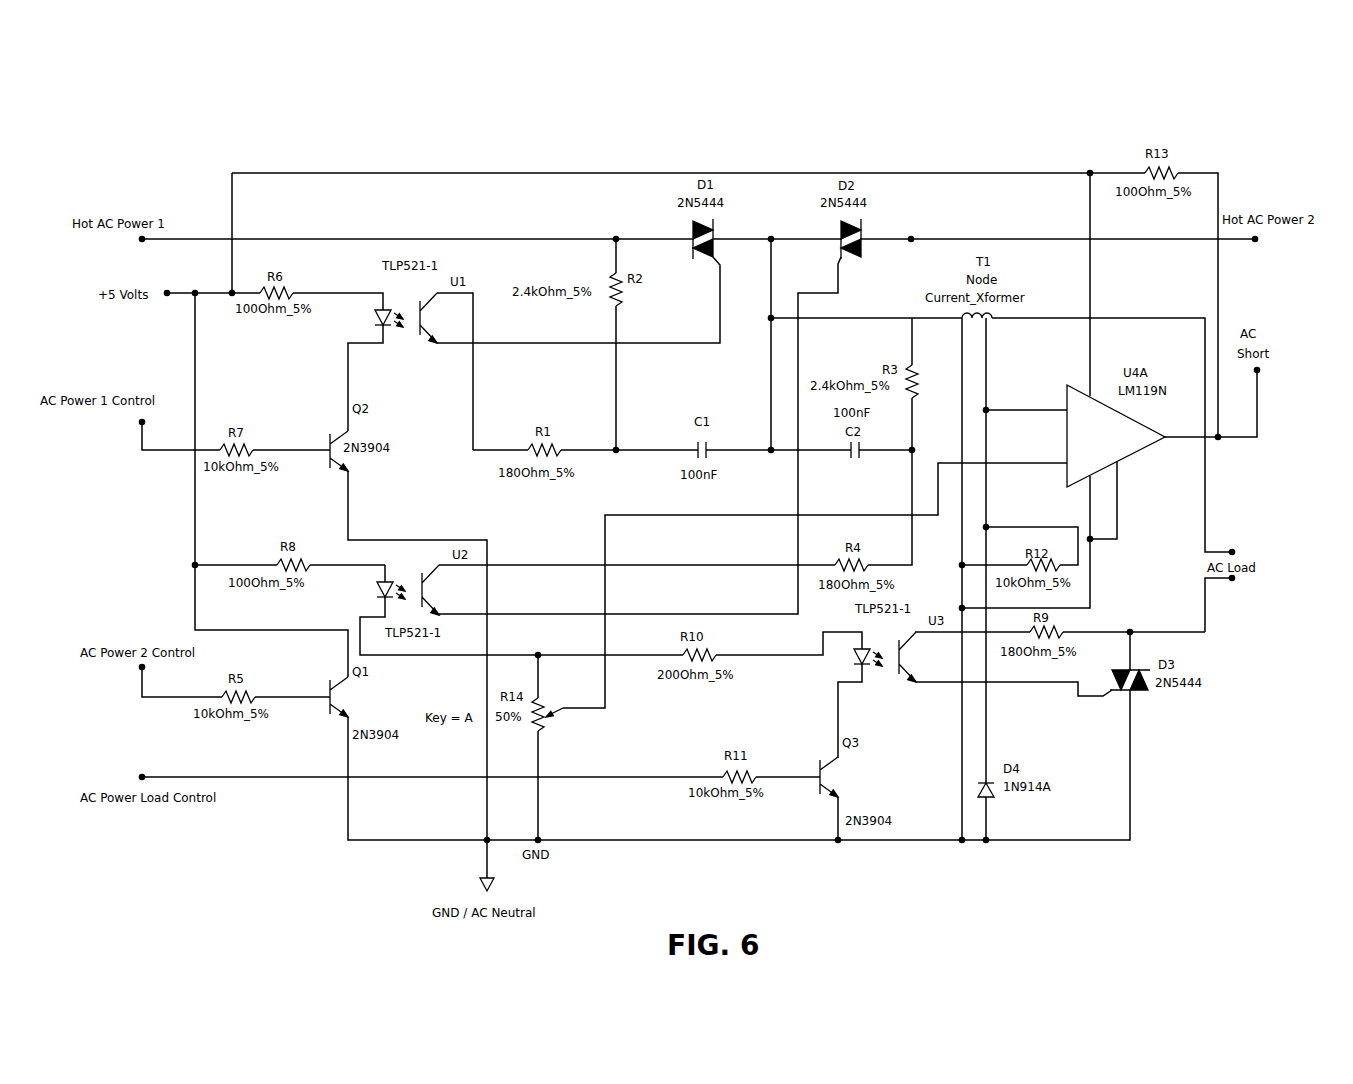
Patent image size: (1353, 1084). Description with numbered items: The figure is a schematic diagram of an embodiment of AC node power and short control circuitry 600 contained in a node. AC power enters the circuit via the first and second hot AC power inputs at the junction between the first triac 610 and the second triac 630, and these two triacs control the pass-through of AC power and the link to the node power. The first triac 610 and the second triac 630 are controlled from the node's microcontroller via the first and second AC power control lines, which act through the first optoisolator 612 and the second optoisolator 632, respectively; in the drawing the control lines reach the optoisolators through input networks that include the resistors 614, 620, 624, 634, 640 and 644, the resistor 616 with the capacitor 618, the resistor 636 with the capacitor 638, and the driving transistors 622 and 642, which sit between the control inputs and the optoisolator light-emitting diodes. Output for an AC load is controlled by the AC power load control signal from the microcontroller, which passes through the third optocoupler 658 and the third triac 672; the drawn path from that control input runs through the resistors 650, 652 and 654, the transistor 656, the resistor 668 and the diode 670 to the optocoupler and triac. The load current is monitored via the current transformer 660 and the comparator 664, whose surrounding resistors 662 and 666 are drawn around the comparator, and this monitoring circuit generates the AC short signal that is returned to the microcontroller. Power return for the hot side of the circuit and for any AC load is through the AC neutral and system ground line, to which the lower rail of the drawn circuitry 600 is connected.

The AC node power and short control circuitry 600 is at (285, 122).
The triac D1 610 is at (693, 230).
The optoisolator U1 612 is at (378, 318).
The resistor R6 614 is at (258, 291).
The resistor R1 616 is at (562, 446).
The capacitor C1 618 is at (697, 446).
The resistor R7 620 is at (250, 447).
The transistor Q2 622 is at (346, 440).
The resistor R2 624 is at (619, 300).
The triac D2 630 is at (841, 230).
The optoisolator U2 632 is at (389, 582).
The resistor R8 634 is at (281, 562).
The resistor R4 636 is at (866, 563).
The capacitor C2 638 is at (862, 456).
The resistor R5 640 is at (250, 694).
The transistor Q1 642 is at (346, 692).
The resistor R3 644 is at (933, 366).
The potentiometer R14 650 is at (547, 728).
The resistor R10 652 is at (682, 653).
The resistor R11 654 is at (722, 774).
The transistor Q3 656 is at (834, 771).
The optocoupler U3 658 is at (878, 668).
The current transformer T1 660 is at (990, 320).
The resistor R13 662 is at (1145, 171).
The comparator U4A 664 is at (1125, 462).
The resistor R12 666 is at (1022, 562).
The resistor R9 668 is at (1062, 630).
The diode D4 670 is at (995, 790).
The triac D3 672 is at (1138, 693).